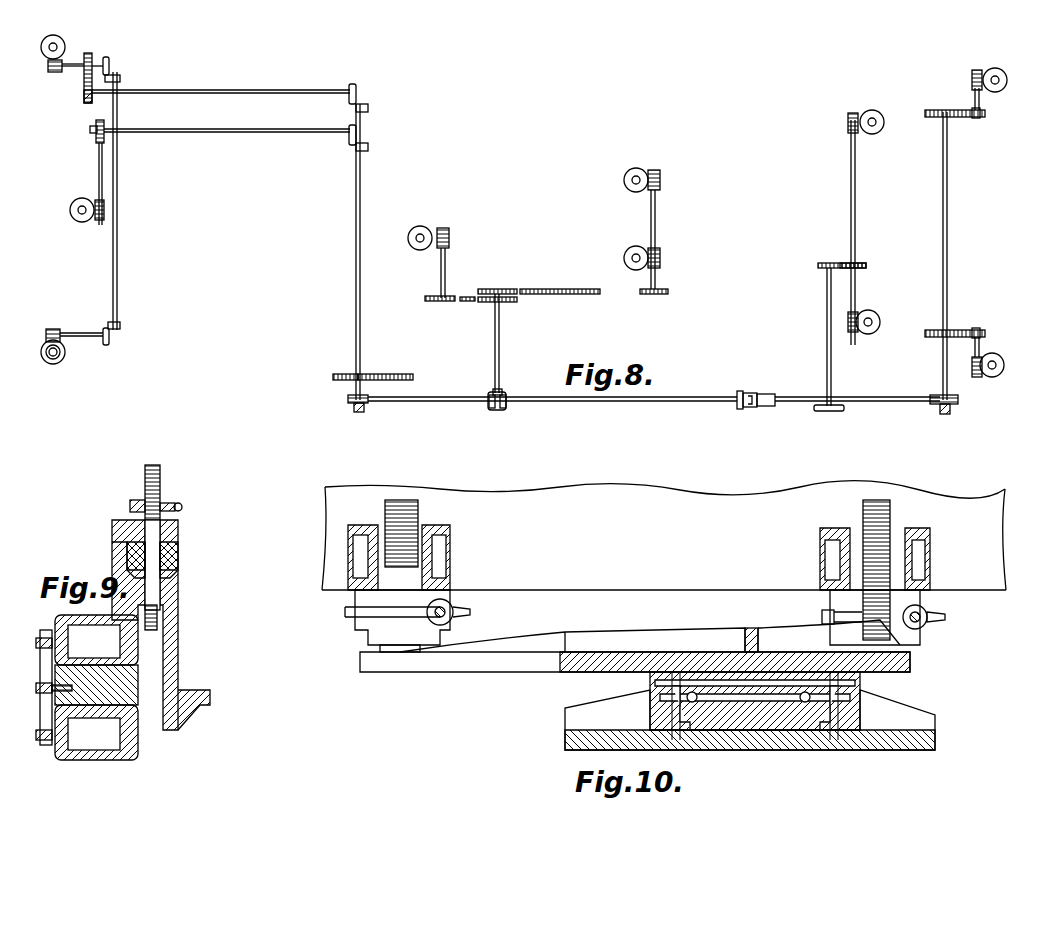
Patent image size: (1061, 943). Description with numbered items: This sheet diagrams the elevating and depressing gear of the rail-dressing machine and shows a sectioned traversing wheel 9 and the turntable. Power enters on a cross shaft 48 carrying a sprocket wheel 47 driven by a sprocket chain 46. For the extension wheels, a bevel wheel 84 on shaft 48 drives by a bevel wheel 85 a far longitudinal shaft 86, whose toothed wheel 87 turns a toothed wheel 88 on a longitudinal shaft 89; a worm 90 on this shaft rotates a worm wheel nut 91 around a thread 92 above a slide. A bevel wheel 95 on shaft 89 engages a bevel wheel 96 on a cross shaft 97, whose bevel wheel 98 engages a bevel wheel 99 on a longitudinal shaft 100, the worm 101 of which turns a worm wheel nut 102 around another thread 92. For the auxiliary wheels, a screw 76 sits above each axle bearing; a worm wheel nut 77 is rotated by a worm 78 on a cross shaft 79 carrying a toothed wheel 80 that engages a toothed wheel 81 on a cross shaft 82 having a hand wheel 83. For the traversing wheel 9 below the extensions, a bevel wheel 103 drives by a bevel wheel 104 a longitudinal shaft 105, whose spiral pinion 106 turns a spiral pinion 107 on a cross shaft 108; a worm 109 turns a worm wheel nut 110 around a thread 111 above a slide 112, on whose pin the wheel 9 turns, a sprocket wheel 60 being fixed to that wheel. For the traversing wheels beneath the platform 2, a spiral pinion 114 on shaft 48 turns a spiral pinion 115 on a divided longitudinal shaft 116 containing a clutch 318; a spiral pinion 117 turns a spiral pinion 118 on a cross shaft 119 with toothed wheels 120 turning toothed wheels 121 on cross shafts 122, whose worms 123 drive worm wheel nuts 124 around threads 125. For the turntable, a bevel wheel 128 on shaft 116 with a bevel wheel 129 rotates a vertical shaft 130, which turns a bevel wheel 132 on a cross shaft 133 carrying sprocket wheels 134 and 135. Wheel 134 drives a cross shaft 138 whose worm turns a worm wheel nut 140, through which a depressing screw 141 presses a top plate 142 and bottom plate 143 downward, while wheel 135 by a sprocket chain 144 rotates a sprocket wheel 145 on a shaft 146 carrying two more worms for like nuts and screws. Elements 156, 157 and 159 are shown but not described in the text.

In FIG. 10, the platform 2 is at (360, 549).
In FIG. 9, the traversing wheel 9 is at (96, 687).
In FIG. 8, the sprocket chain 46 is at (398, 374).
In FIG. 8, the sprocket wheel 47 is at (338, 375).
In FIG. 8, the cross shaft 48 is at (355, 257).
In FIG. 9, the sprocket wheel 60 is at (35, 644).
In FIG. 8, the screw 76 is at (884, 122).
In FIG. 8, the worm wheel nut 77 is at (876, 134).
In FIG. 8, the worm 78 is at (847, 125).
In FIG. 8, the cross shaft 79 is at (850, 207).
In FIG. 8, the toothed wheel 80 is at (867, 265).
In FIG. 8, the toothed wheel 81 is at (817, 265).
In FIG. 8, the cross shaft 82 is at (826, 350).
In FIG. 8, the hand wheel 83 is at (829, 412).
In FIG. 8, the bevel wheel 84 is at (369, 108).
In FIG. 8, the bevel wheel 85 is at (357, 93).
In FIG. 8, the far longitudinal shaft 86 is at (230, 89).
In FIG. 8, the toothed wheel 87 is at (84, 98).
In FIG. 8, the toothed wheel 88 is at (88, 52).
In FIG. 8, the longitudinal shaft 89 is at (74, 68).
In FIG. 8, the worm 90 is at (47, 67).
In FIG. 8, the worm wheel nut 91 is at (41, 47).
In FIG. 8, the thread 92 is at (53, 35).
In FIG. 8, the bevel wheel 95 is at (110, 60).
In FIG. 8, the bevel wheel 96 is at (121, 78).
In FIG. 8, the cross shaft 97 is at (118, 115).
In FIG. 8, the bevel wheel 98 is at (121, 325).
In FIG. 8, the bevel wheel 99 is at (110, 340).
In FIG. 8, the longitudinal shaft 100 is at (83, 332).
In FIG. 8, the worm 101 is at (52, 329).
In FIG. 8, the worm wheel nut 102 is at (62, 352).
In FIG. 8, the bevel wheel 103 is at (369, 147).
In FIG. 8, the bevel wheel 104 is at (348, 134).
In FIG. 8, the longitudinal shaft 105 is at (232, 134).
In FIG. 8, the spiral pinion 106 is at (95, 121).
In FIG. 8, the spiral pinion 107 is at (90, 130).
In FIG. 8, the cross shaft 108 is at (98, 167).
In FIG. 9, the cross shaft 108 is at (183, 510).
In FIG. 8, the worm 109 is at (105, 213).
In FIG. 9, the worm 109 is at (182, 505).
In FIG. 8, the worm wheel nut 110 is at (75, 208).
In FIG. 9, the worm wheel nut 110 is at (130, 505).
In FIG. 8, the thread 111 is at (76, 216).
In FIG. 9, the thread 111 is at (144, 476).
In FIG. 9, the slide 112 is at (158, 658).
In FIG. 8, the spiral pinion 114 is at (347, 399).
In FIG. 8, the spiral pinion 115 is at (355, 408).
In FIG. 9, the spiral pinion 115 is at (52, 708).
In FIG. 8, the divided longitudinal shaft 116 is at (425, 403).
In FIG. 8, the spiral pinion 117 is at (941, 411).
In FIG. 8, the spiral pinion 118 is at (959, 400).
In FIG. 8, the cross shaft 119 is at (942, 227).
In FIG. 8, the toothed wheel 120 is at (938, 111).
In FIG. 8, the toothed wheel 121 is at (981, 118).
In FIG. 8, the cross shaft 122 is at (980, 103).
In FIG. 8, the worm 123 is at (971, 78).
In FIG. 8, the worm wheel nut 124 is at (996, 68).
In FIG. 8, the thread 125 is at (1007, 80).
In FIG. 8, the bevel wheel 128 is at (490, 405).
In FIG. 8, the bevel wheel 129 is at (503, 408).
In FIG. 8, the vertical shaft 130 is at (507, 395).
In FIG. 8, the bevel wheel 132 is at (492, 390).
In FIG. 8, the cross shaft 133 is at (500, 352).
In FIG. 8, the sprocket wheel 134 is at (504, 303).
In FIG. 8, the sprocket wheel 135 is at (494, 288).
In FIG. 8, the cross shaft 138 is at (440, 270).
In FIG. 10, the cross shaft 138 is at (455, 610).
In FIG. 8, the worm wheel nut 140 is at (413, 246).
In FIG. 10, the worm wheel nut 140 is at (822, 614).
In FIG. 8, the depressing screw 141 is at (408, 238).
In FIG. 10, the depressing screw 141 is at (384, 510).
In FIG. 10, the top plate 142 is at (490, 675).
In FIG. 10, the bottom plate 143 is at (617, 742).
In FIG. 8, the sprocket chain 144 is at (575, 288).
In FIG. 8, the sprocket wheel 145 is at (655, 295).
In FIG. 8, the shaft 146 is at (656, 222).
In FIG. 10, the shaft 146 is at (946, 622).
In FIG. 8, the gear 156 is at (467, 302).
In FIG. 8, the gear 157 is at (437, 302).
In FIG. 8, the worm 159 is at (450, 240).
In FIG. 10, the worm 159 is at (928, 612).
In FIG. 8, the clutch 318 is at (757, 409).